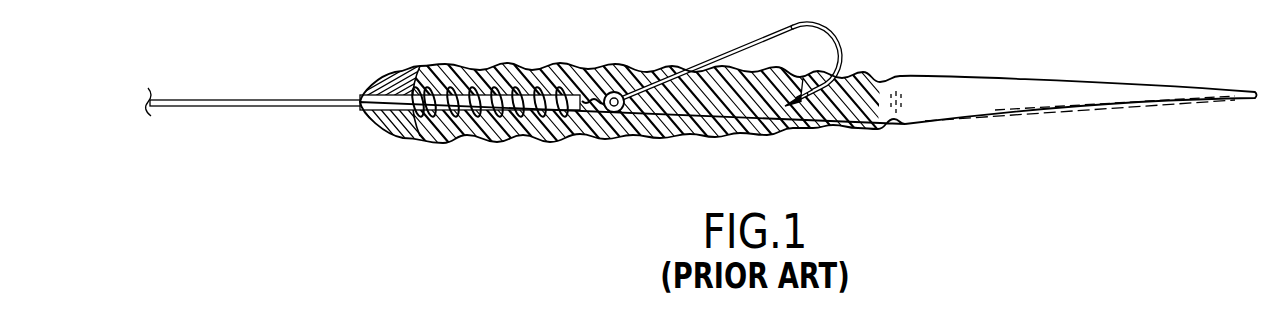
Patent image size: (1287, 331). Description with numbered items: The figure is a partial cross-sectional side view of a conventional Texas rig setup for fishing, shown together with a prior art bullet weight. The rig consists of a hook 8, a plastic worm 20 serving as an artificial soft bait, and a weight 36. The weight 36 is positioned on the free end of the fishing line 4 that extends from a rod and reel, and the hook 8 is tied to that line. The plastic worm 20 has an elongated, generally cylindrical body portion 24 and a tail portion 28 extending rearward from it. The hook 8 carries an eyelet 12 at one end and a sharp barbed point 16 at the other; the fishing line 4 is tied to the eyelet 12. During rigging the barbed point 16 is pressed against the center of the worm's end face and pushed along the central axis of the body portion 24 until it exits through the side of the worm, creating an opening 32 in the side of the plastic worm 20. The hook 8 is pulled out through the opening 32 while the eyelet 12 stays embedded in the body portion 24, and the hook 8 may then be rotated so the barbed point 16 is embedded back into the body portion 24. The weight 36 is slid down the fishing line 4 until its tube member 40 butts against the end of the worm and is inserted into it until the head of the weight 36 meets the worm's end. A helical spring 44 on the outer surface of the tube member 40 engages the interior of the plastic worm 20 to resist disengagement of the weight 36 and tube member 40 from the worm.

The fishing line 4 is at (336, 106).
The hook 8 is at (834, 45).
The eyelet 12 is at (610, 128).
The barbed point 16 is at (793, 126).
The plastic worm 20 is at (680, 142).
The body portion 24 is at (468, 68).
The tail portion 28 is at (1100, 79).
The opening 32 is at (695, 56).
The weight 36 is at (386, 78).
The tube member 40 is at (400, 113).
The helical spring 44 is at (477, 126).